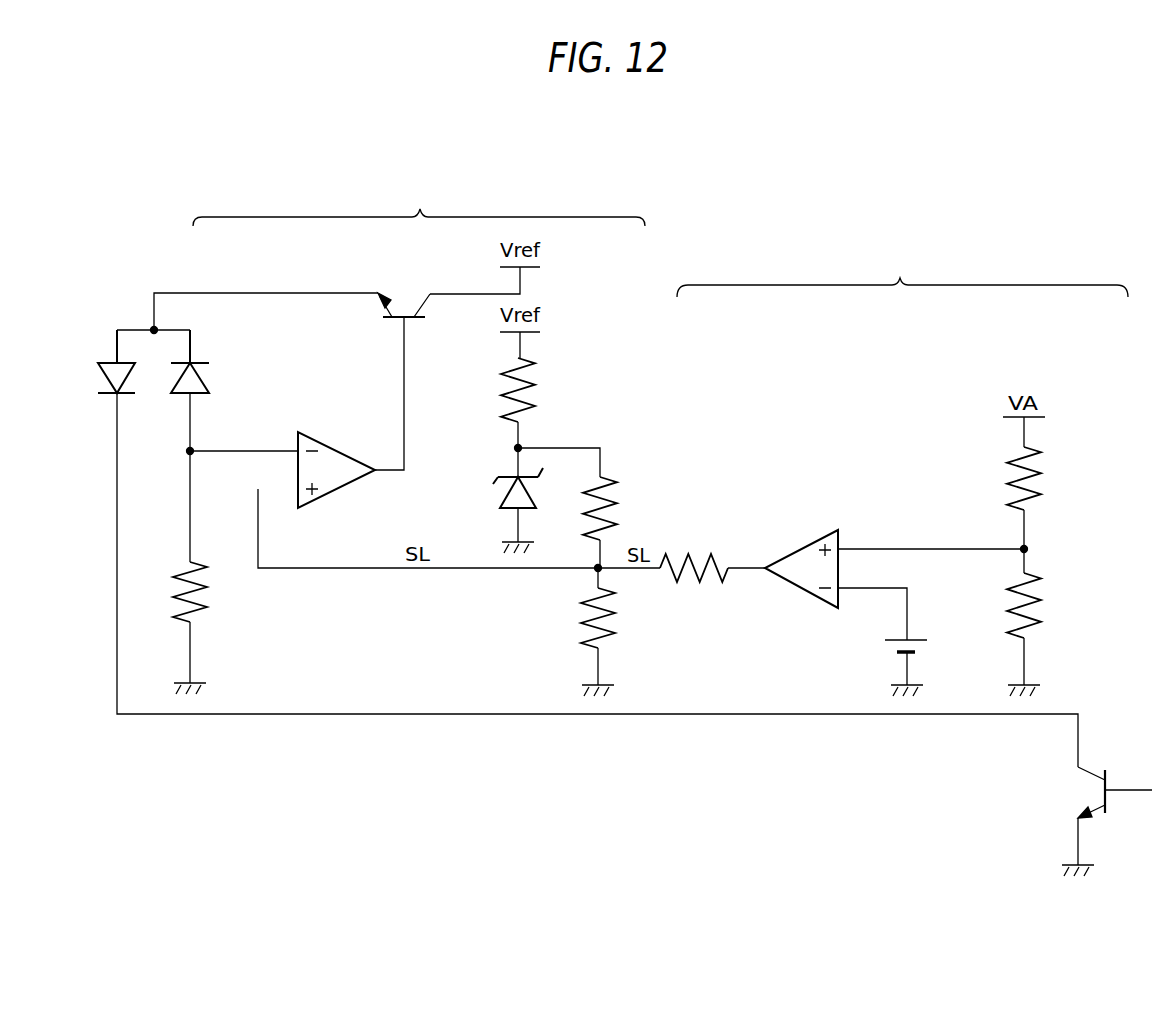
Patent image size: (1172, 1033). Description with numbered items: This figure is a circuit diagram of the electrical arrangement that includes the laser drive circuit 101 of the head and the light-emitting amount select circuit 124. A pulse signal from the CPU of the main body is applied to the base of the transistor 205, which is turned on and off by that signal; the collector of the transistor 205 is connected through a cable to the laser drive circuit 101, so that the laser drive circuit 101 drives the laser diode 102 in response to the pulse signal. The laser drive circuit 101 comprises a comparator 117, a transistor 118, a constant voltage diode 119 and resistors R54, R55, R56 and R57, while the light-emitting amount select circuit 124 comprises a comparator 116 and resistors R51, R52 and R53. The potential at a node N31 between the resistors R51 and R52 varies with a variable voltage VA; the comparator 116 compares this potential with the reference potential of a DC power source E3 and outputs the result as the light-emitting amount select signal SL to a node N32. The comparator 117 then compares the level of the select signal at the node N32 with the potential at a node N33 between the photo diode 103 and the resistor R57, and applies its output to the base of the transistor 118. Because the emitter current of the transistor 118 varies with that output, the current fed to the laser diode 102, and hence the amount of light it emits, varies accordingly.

The laser drive circuit 101 is at (419, 204).
The light-emitting amount select circuit 124 is at (902, 274).
The laser diode 102 is at (100, 370).
The photo diode 103 is at (207, 387).
The comparator 117 is at (338, 450).
The transistor 118 is at (418, 320).
The constant voltage diode 119 is at (500, 480).
The comparator 116 is at (803, 547).
The transistor 205 is at (1107, 770).
The node N31 is at (1028, 547).
The node N32 is at (596, 565).
The node N33 is at (193, 449).
The resistor R51 is at (1042, 488).
The resistor R52 is at (1042, 613).
The resistor R53 is at (732, 543).
The resistor R54 is at (613, 523).
The resistor R55 is at (613, 628).
The resistor R56 is at (532, 402).
The resistor R57 is at (202, 603).
The DC power source E3 is at (917, 638).